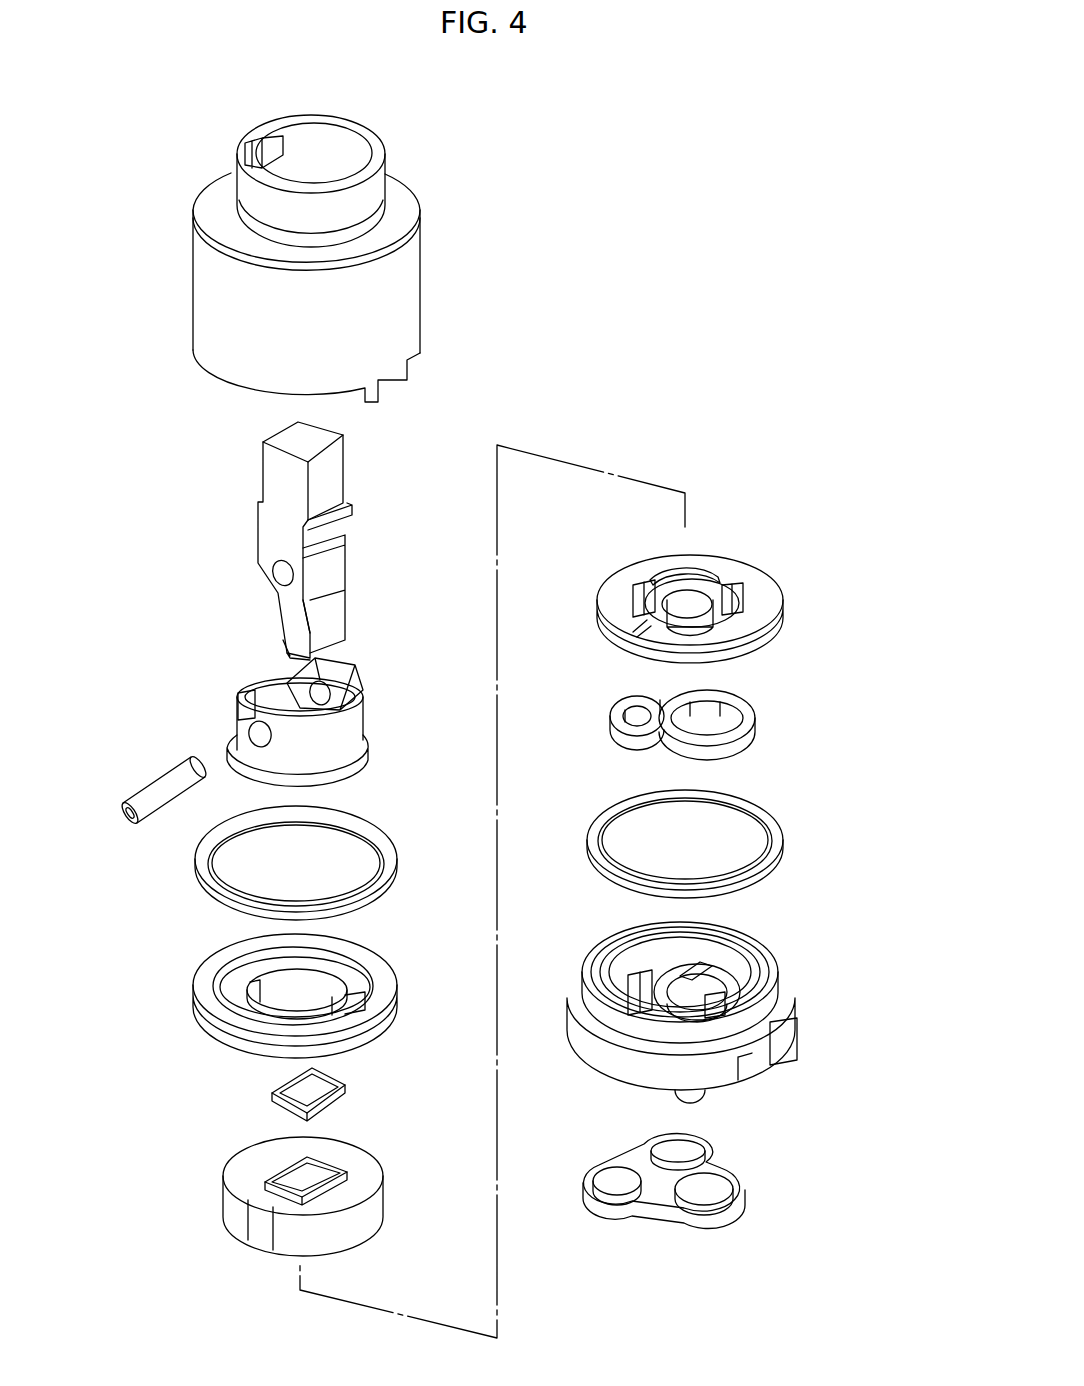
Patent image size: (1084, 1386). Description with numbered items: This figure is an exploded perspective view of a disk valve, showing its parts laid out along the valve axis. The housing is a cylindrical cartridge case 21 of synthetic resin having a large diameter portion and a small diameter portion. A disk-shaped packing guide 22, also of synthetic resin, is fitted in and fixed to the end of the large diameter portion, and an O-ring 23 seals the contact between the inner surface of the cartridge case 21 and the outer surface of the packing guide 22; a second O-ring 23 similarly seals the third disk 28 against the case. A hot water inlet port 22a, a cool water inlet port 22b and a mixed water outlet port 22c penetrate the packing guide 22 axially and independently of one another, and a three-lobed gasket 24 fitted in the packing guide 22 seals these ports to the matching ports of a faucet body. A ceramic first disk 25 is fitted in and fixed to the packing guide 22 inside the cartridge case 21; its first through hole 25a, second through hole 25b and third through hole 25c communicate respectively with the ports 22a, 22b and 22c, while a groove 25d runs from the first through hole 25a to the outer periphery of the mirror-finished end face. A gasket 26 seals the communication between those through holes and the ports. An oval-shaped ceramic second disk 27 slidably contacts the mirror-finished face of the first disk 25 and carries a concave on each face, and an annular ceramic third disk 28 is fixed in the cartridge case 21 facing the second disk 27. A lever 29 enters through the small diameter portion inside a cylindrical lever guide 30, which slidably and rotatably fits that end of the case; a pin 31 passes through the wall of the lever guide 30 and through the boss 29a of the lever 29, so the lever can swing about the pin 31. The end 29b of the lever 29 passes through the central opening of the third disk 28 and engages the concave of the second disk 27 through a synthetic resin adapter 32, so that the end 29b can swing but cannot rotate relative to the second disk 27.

The cartridge case 21 is at (212, 320).
The packing guide 22 is at (711, 1007).
The hot water inlet port 22a is at (632, 980).
The cool water inlet port 22b is at (693, 967).
The mixed water outlet port 22c is at (713, 1005).
The O-ring 23 is at (208, 880).
The gasket 24 is at (690, 1222).
The first disk 25 is at (690, 595).
The first through hole 25a is at (635, 585).
The second through hole 25b is at (700, 573).
The third through hole 25c is at (720, 603).
The groove 25d is at (643, 627).
The gasket 26 is at (752, 730).
The second disk 27 is at (252, 1153).
The third disk 28 is at (198, 985).
The lever 29 is at (249, 541).
The boss 29a is at (265, 573).
The end of lever 29b is at (297, 642).
The lever guide 30 is at (245, 745).
The pin 31 is at (175, 782).
The adapter 32 is at (273, 1092).